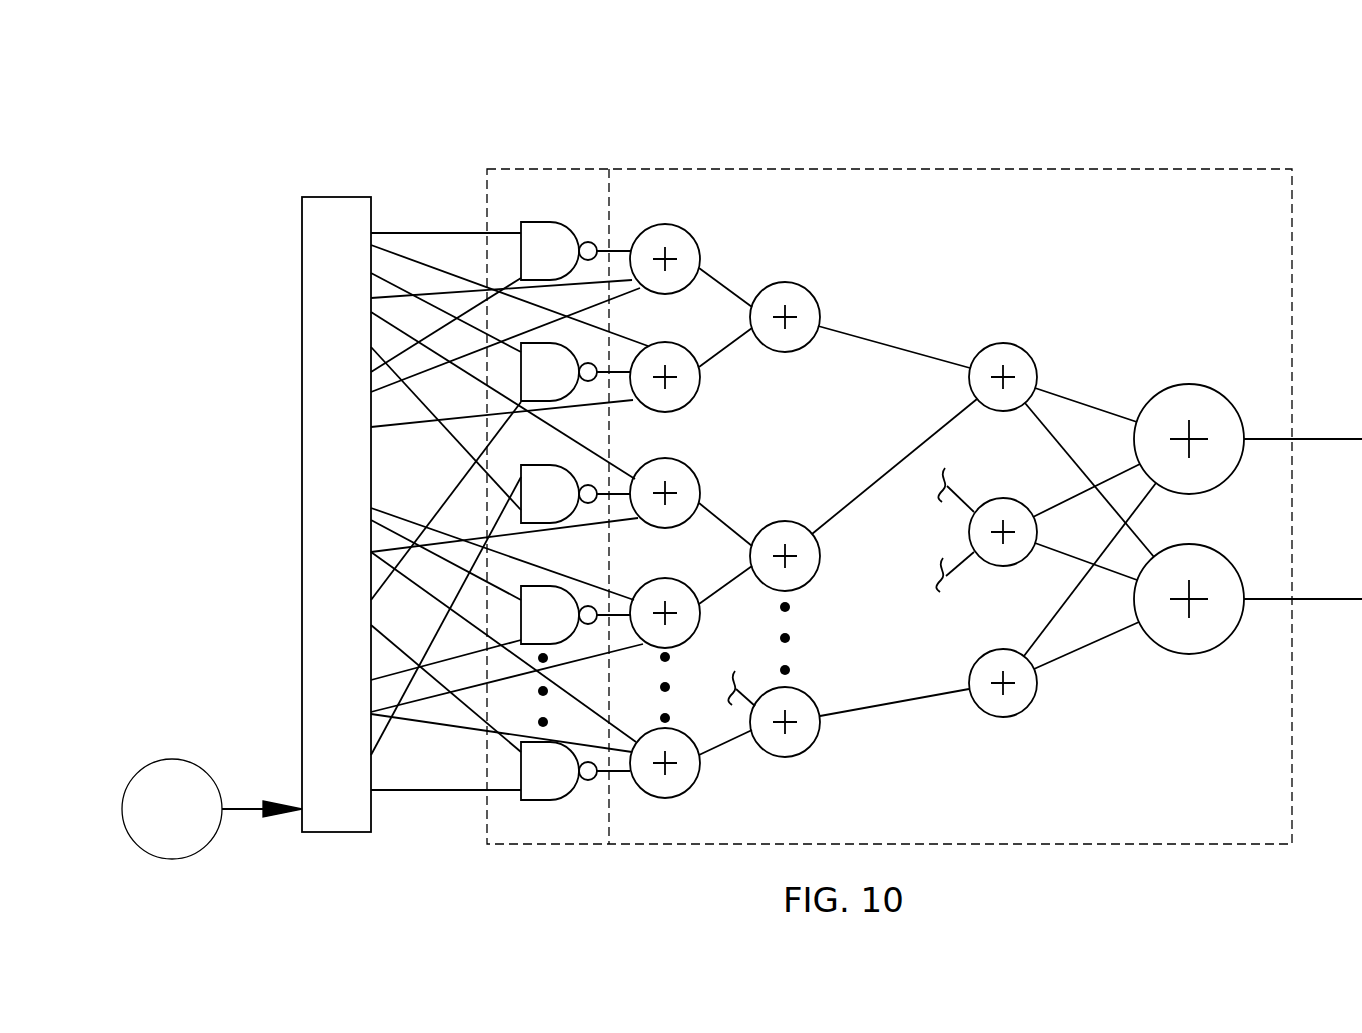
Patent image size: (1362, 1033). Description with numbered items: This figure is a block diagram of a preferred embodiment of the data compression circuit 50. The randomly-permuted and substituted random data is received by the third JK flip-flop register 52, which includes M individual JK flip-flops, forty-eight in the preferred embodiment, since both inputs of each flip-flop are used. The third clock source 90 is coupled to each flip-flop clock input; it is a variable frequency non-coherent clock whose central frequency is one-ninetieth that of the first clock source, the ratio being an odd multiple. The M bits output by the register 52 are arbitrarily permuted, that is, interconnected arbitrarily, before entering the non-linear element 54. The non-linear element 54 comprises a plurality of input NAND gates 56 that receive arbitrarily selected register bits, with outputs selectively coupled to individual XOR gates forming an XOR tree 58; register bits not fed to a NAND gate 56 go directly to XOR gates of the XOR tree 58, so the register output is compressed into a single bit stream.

The data compression circuit 50 is at (544, 120).
The third JK flip-flop register 52 is at (323, 210).
The non-linear element (NLE) 54 is at (917, 152).
The input NAND gates 56 is at (570, 188).
The XOR tree 58 is at (1078, 188).
The third clock source 90 is at (212, 809).